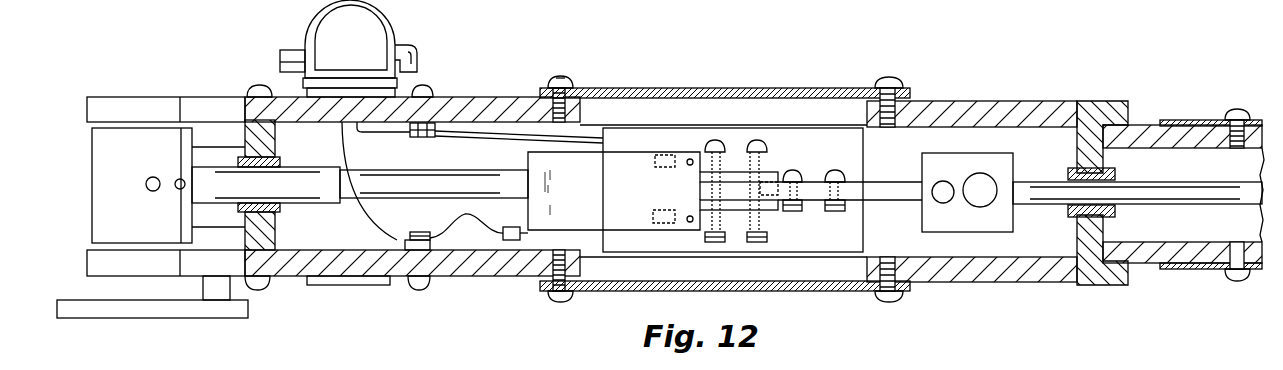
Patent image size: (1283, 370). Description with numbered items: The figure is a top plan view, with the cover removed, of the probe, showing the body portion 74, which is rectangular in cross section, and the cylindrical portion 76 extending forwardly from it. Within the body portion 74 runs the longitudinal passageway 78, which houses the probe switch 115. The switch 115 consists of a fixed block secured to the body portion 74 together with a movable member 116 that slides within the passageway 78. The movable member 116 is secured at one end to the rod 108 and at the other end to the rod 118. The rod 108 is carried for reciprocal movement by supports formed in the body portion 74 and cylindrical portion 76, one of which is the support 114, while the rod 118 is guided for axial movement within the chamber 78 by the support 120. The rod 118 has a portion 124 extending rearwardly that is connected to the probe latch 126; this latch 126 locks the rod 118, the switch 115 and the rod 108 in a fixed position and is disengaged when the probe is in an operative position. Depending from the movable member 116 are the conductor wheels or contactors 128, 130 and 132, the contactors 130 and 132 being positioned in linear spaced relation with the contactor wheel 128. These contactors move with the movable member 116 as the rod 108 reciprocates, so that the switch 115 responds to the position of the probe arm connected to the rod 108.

The body portion 74 is at (997, 101).
The cylindrical portion 76 is at (1148, 125).
The longitudinal passageway 78 is at (904, 161).
The rod 108 is at (1161, 208).
The support 114 is at (1105, 163).
The probe switch 115 is at (846, 237).
The movable member 116 is at (597, 181).
The rod 118 is at (468, 176).
The support 120 is at (272, 143).
The portion 124 is at (300, 206).
The probe latch 126 is at (95, 144).
The contactor wheel 128 is at (772, 170).
The contactor 130 is at (653, 212).
The contactor 132 is at (665, 152).